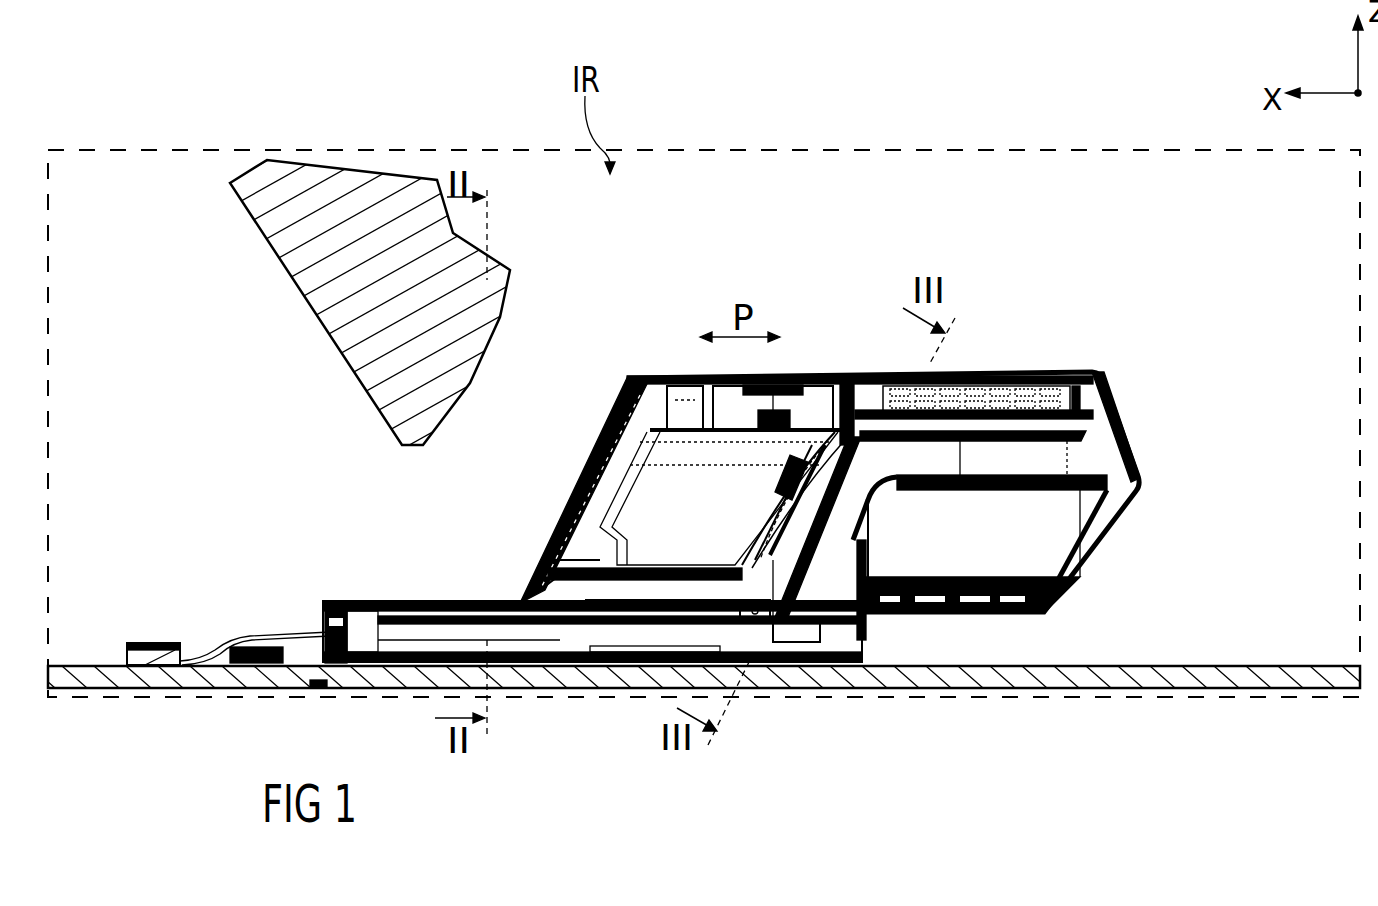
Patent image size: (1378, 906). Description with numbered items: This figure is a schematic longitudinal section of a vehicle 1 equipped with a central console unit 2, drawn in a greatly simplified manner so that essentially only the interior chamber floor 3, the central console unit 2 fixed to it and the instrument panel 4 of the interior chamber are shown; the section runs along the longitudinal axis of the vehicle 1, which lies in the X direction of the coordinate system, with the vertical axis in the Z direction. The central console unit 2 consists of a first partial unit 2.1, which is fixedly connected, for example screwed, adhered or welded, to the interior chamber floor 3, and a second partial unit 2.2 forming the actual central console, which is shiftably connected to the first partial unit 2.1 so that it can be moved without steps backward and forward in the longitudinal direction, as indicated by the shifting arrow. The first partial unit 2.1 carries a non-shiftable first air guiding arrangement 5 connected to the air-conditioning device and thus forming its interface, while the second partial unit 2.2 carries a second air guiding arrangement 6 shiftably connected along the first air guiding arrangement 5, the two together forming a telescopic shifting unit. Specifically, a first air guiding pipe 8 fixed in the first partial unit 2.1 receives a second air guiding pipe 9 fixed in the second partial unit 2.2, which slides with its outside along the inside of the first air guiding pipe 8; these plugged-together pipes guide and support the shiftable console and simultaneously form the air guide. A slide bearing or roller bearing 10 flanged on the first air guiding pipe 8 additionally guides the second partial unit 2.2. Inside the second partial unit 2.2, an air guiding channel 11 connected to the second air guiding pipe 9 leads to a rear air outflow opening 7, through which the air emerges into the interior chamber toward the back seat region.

The vehicle 1 is at (150, 148).
The central console unit 2 is at (1142, 366).
The first partial unit 2.1 is at (340, 603).
The second partial unit 2.2 is at (1012, 372).
The interior chamber floor 3 is at (1262, 665).
The instrument panel 4 is at (337, 178).
The first air guiding arrangement 5 is at (368, 603).
The second air guiding arrangement 6 is at (790, 665).
The air outflow opening 7 is at (1130, 437).
The first air guiding pipe 8 is at (350, 640).
The second air guiding pipe 9 is at (516, 600).
The slide bearing or roller bearing 10 is at (618, 663).
The air guiding channel 11 is at (880, 470).